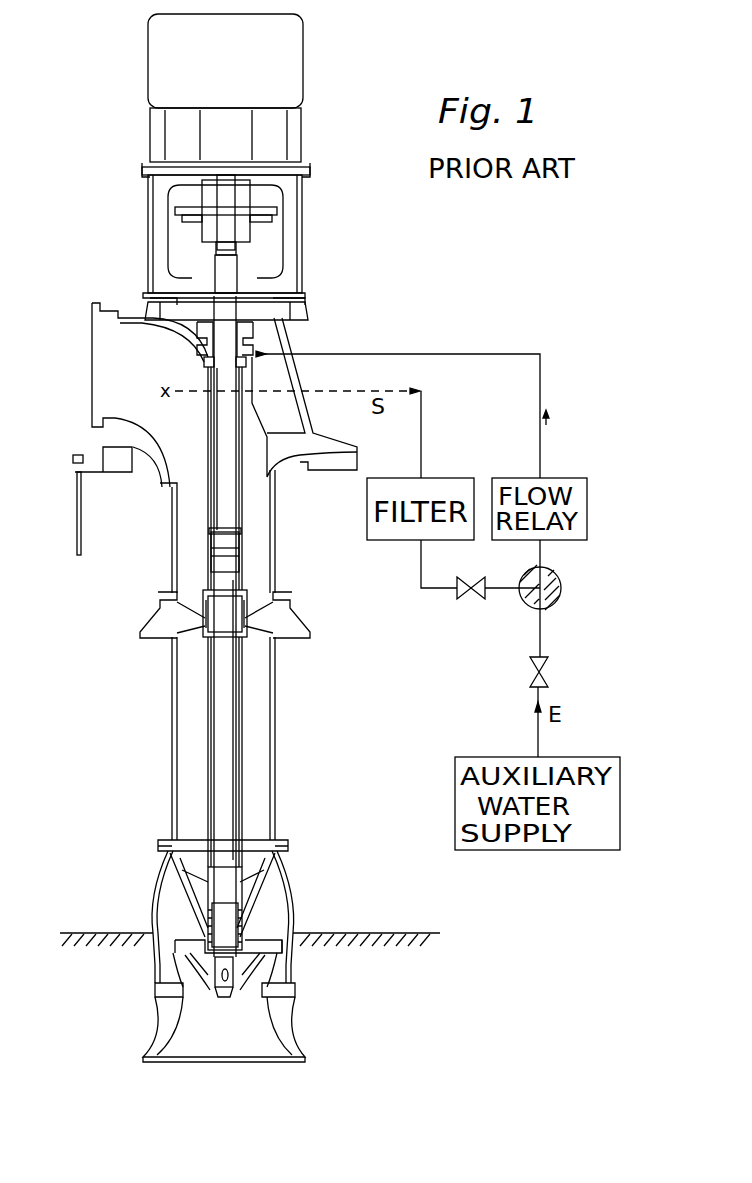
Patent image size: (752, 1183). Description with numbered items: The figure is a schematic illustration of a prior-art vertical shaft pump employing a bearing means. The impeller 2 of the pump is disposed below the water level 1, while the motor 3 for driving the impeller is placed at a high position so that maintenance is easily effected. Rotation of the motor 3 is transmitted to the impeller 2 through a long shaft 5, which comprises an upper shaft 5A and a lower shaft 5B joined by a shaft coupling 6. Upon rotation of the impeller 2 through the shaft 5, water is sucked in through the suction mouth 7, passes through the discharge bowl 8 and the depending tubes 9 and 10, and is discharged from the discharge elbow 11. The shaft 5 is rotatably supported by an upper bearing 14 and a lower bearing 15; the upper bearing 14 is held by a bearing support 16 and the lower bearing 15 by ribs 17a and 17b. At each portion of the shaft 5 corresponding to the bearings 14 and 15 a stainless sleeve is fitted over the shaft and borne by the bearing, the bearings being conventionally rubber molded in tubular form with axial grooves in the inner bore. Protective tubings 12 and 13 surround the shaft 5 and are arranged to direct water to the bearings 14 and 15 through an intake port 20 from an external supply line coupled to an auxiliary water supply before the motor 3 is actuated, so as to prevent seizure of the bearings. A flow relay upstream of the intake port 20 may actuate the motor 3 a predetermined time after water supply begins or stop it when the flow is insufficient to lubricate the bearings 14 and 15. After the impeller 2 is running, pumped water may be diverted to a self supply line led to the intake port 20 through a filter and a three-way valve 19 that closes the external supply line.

The water level 1 is at (396, 930).
The impeller 2 is at (294, 990).
The motor 3 is at (300, 140).
The shaft 5 is at (206, 512).
The upper shaft 5A is at (232, 520).
The lower shaft 5B is at (235, 713).
The shaft coupling 6 is at (232, 548).
The suction mouth 7 is at (276, 1035).
The discharge bowl 8 is at (296, 918).
The depending tube 9 is at (275, 742).
The depending tube 10 is at (275, 540).
The discharge elbow 11 is at (93, 360).
The protective tubing 12 is at (240, 773).
The protective tubing 13 is at (210, 443).
The upper bearing 14 is at (262, 603).
The lower bearing 15 is at (248, 920).
The bearing support 16 is at (250, 628).
The rib 17a is at (252, 888).
The rib 17b is at (187, 940).
The three-way valve 19 is at (565, 596).
The intake port 20 is at (270, 352).